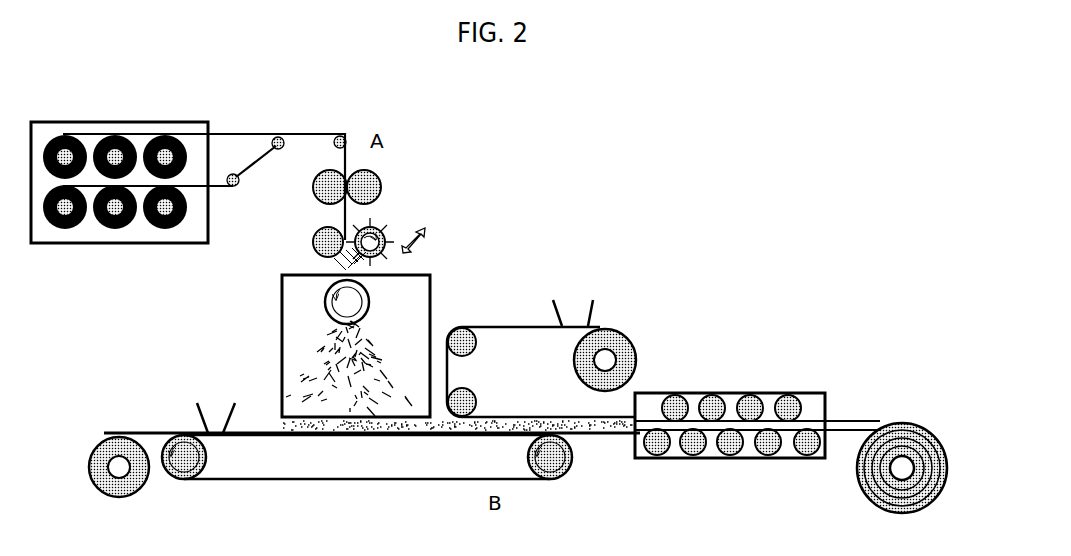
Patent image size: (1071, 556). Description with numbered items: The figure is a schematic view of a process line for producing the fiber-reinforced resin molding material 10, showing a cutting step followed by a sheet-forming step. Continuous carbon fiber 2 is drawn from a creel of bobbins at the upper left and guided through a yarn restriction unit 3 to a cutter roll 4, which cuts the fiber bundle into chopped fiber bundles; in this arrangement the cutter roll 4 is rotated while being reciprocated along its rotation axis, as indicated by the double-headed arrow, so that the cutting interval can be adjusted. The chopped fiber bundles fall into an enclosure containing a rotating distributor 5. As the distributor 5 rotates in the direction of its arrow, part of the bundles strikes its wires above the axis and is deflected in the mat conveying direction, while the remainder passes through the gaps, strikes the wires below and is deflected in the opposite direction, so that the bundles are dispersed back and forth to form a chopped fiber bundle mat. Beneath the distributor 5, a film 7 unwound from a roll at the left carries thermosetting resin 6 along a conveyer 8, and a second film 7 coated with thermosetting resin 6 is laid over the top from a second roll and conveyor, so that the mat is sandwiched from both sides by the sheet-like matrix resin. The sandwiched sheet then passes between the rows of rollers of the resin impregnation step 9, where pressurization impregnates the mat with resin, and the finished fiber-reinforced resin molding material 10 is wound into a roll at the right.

The carbon fiber 2 is at (180, 141).
The yarn restriction unit 3 is at (368, 187).
The cutter roll 4 is at (383, 244).
The distributor 5 is at (320, 300).
The thermosetting resin 6 is at (216, 413).
The film 7 is at (113, 443).
The conveyer 8 is at (330, 456).
The resin impregnation step 9 is at (757, 444).
The fiber-reinforced resin molding material 10 is at (877, 486).